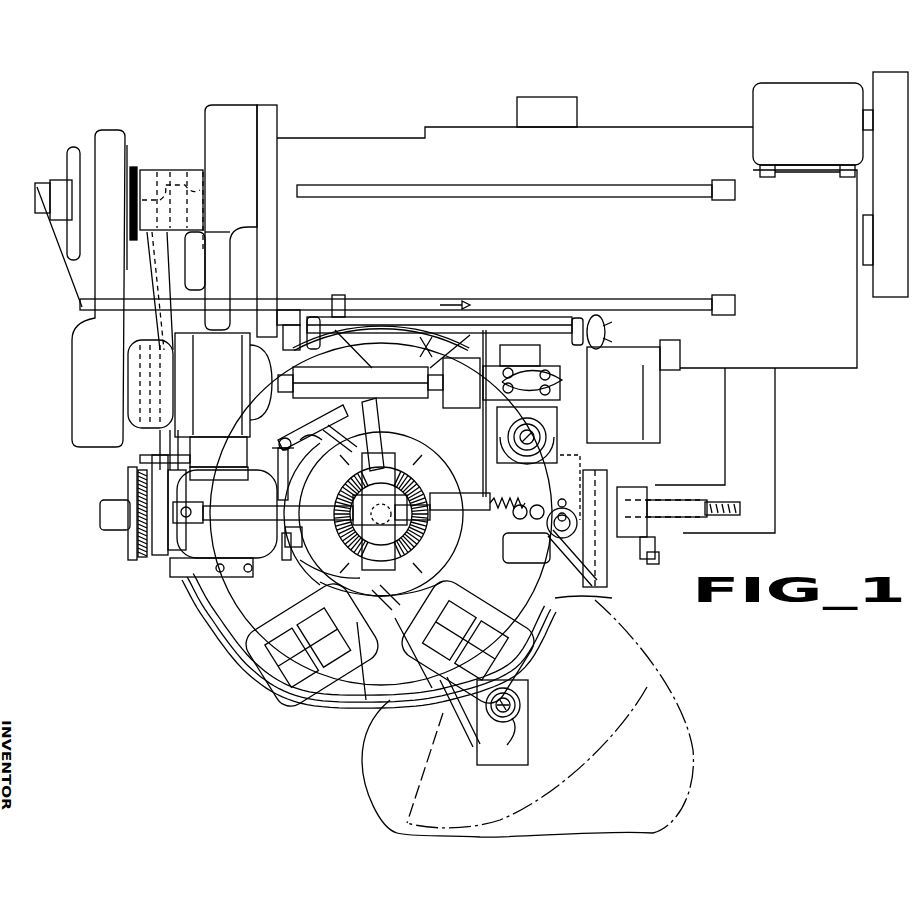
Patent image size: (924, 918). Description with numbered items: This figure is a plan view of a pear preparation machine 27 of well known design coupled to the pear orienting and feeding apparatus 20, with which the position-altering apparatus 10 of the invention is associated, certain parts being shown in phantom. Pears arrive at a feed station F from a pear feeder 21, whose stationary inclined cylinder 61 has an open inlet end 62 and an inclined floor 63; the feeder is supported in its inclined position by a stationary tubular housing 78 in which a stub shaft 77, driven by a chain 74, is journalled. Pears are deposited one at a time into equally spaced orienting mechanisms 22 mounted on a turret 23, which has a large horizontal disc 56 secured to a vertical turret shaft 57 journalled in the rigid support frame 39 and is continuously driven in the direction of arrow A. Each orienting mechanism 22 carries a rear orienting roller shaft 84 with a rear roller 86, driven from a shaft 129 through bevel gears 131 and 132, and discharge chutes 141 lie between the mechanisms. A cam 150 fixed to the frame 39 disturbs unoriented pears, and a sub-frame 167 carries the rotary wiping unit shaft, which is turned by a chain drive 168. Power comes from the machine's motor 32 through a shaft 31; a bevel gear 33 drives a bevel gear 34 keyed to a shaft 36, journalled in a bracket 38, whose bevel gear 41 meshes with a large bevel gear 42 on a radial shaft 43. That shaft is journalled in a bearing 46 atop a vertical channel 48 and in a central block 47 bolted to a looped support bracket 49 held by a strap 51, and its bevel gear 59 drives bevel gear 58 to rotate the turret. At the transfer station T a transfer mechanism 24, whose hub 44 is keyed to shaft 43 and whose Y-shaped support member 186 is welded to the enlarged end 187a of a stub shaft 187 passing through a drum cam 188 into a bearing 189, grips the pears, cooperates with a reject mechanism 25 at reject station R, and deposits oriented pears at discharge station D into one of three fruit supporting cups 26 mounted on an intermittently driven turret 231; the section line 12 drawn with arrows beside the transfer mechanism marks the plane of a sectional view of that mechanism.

The position-altering apparatus 10 is at (432, 345).
The section line 12 is at (590, 470).
The pear orienting and feeding apparatus 20 is at (232, 672).
The pear feeder 21 is at (690, 705).
The orienting mechanism 22 is at (425, 340).
The turret 23 is at (315, 462).
The transfer mechanism 24 is at (592, 438).
The reject mechanism 25 is at (594, 586).
The fruit supporting cup 26 is at (608, 372).
The pear preparation machine 27 is at (566, 239).
The shaft 31 is at (192, 190).
The motor 32 is at (232, 385).
The bevel gear 33 is at (166, 168).
The bevel gear 34 is at (136, 204).
The shaft 36 is at (122, 352).
The bracket 38 is at (140, 458).
The rigid support frame 39 is at (781, 442).
The bevel gear 41 is at (150, 470).
The large diameter bevel gear 42 is at (138, 485).
The shaft 43 is at (294, 469).
The hub 44 is at (513, 539).
The bearing 46 is at (168, 584).
The central block 47 is at (380, 517).
The channel 48 is at (170, 560).
The looped support bracket 49 is at (378, 484).
The strap 51 is at (345, 416).
The horizontal disc 56 is at (468, 642).
The turret shaft 57 is at (381, 514).
The bevel gear 58 is at (308, 514).
The bevel gear 59 is at (381, 514).
The inclined cylinder 61 is at (650, 678).
The open inlet end 62 is at (690, 740).
The inclined floor 63 is at (620, 780).
The chain 74 is at (445, 720).
The stub shaft 77 is at (455, 738).
The tubular housing 78 is at (502, 722).
The rear orienting roller shaft 84 is at (360, 612).
The rear roller 86 is at (317, 672).
The shaft 129 is at (340, 582).
The bevel gear 131 is at (335, 603).
The bevel gear 132 is at (388, 599).
The discharge chute 141 is at (228, 640).
The cam 150 is at (358, 644).
The sub-frame 167 is at (365, 639).
The chain drive 168 is at (186, 448).
The Y-shaped support member 186 is at (628, 476).
The stub shaft 187 is at (672, 524).
The enlarged end 187a is at (659, 562).
The drum cam 188 is at (667, 504).
The bearing 189 is at (672, 548).
The turret 231 is at (464, 413).
The arrow A is at (165, 636).
The discharge station D is at (575, 412).
The feed station F is at (415, 735).
The reject station R is at (618, 601).
The transfer station T is at (578, 446).